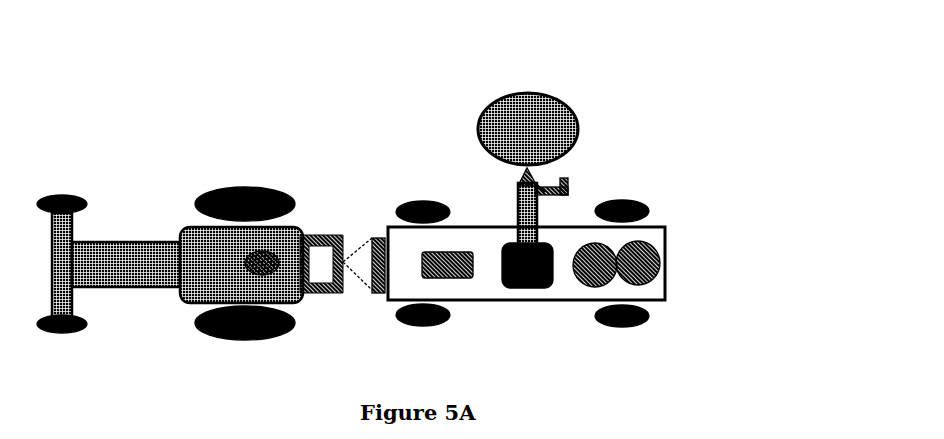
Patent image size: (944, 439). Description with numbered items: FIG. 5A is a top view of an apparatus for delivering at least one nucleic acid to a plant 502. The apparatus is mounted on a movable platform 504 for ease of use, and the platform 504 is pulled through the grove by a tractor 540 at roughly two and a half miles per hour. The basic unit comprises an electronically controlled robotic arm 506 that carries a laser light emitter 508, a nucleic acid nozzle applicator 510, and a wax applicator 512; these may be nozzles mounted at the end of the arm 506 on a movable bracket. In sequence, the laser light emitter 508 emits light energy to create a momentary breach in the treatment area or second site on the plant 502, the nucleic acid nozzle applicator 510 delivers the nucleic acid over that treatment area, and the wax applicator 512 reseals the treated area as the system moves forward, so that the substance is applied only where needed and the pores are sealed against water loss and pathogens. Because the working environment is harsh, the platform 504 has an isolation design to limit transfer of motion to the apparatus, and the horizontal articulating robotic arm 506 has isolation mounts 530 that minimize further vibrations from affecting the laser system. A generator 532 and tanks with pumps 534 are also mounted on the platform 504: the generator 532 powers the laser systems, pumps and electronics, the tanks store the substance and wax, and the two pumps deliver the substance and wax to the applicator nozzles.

The plant 502 is at (531, 93).
The movable platform 504 is at (520, 300).
The electronically controlled robotic arm 506 is at (518, 225).
The laser light emitter 508 is at (520, 197).
The nucleic acid nozzle applicator 510 is at (543, 182).
The wax applicator 512 is at (567, 187).
The isolation mounts 530 is at (552, 285).
The generator 532 is at (415, 275).
The tanks with pumps 534 is at (617, 285).
The tractor 540 is at (122, 243).